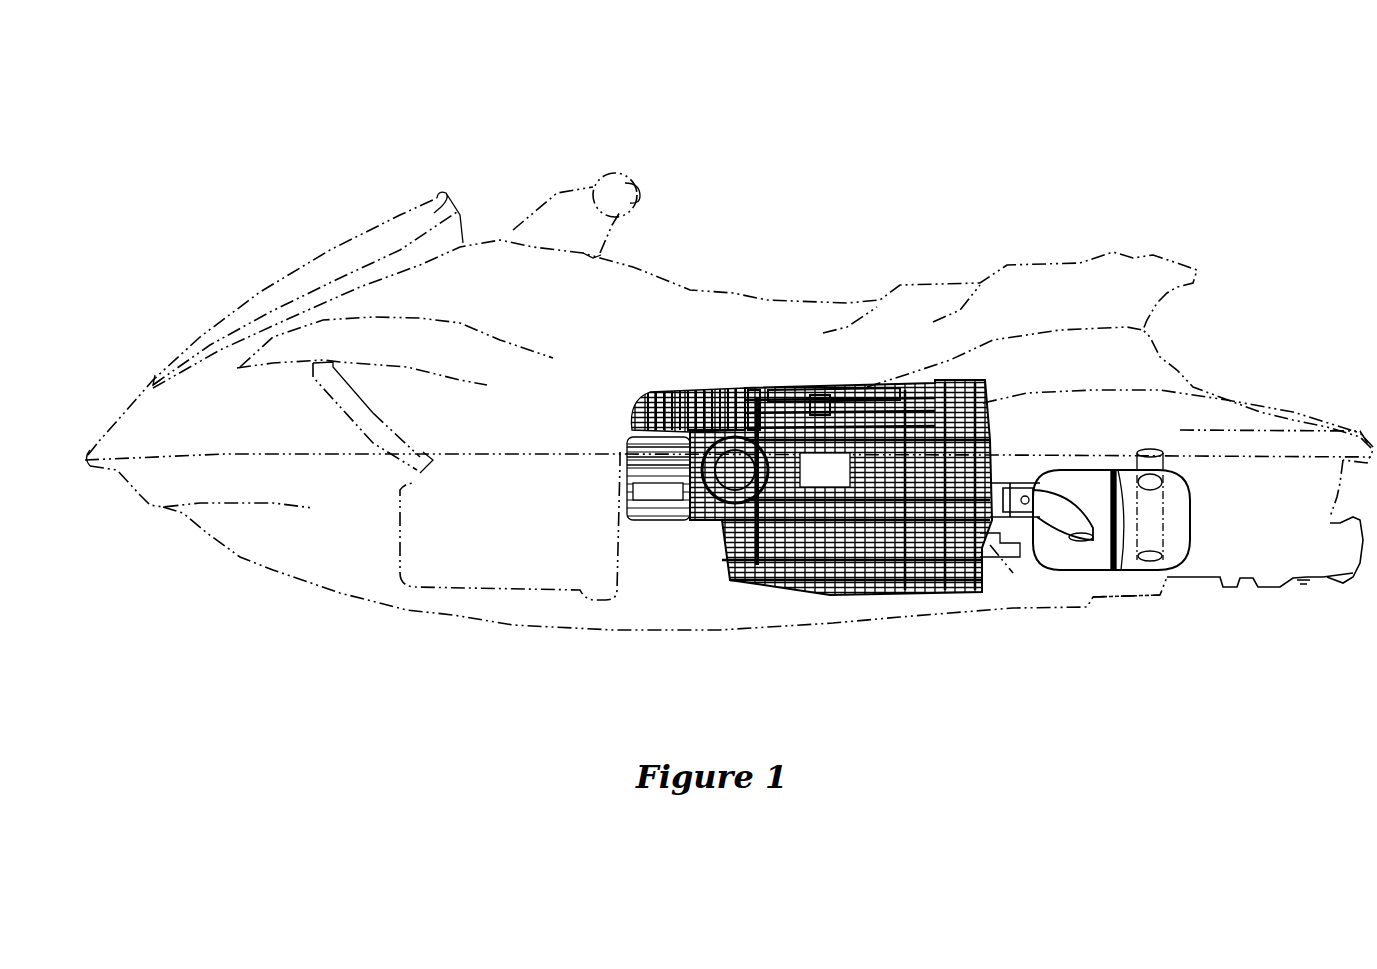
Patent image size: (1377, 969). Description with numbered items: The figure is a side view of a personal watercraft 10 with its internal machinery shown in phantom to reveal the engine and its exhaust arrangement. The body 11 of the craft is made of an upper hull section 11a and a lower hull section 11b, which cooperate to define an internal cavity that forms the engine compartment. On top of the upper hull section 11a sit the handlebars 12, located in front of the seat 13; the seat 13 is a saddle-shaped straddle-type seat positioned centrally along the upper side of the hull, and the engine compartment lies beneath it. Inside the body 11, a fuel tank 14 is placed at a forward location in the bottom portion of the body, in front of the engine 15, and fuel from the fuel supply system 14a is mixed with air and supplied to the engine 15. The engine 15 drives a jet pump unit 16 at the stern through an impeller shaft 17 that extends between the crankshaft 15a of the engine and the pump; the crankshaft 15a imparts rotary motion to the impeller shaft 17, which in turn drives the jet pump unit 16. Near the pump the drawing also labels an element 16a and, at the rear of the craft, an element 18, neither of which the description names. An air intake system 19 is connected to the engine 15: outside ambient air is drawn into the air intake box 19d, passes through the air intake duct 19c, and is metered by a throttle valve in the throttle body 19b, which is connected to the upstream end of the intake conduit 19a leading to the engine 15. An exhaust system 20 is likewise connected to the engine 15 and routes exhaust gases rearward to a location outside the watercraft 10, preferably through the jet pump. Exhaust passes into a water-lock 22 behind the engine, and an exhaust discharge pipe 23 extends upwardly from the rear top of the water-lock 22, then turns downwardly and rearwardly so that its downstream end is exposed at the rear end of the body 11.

The personal watercraft 10 is at (879, 157).
The body 11 is at (68, 388).
The upper hull section 11a is at (136, 394).
The lower hull section 11b is at (128, 467).
The handlebars 12 is at (648, 183).
The seat 13 is at (848, 300).
The fuel tank 14 is at (443, 580).
The fuel supply system 14a is at (791, 390).
The engine 15 is at (830, 594).
The crankshaft 15a is at (985, 578).
The jet pump unit 16 is at (1243, 583).
The water intake duct 16a is at (1121, 597).
The impeller shaft 17 is at (1013, 574).
The steering nozzle 18 is at (1321, 587).
The air intake system 19 is at (714, 373).
The intake conduit 19a is at (833, 393).
The throttle body 19b is at (748, 395).
The air intake duct 19c is at (386, 413).
The air intake box 19d is at (628, 476).
The exhaust system 20 is at (1022, 466).
The water-lock 22 is at (1088, 480).
The exhaust discharge pipe 23 is at (1162, 460).